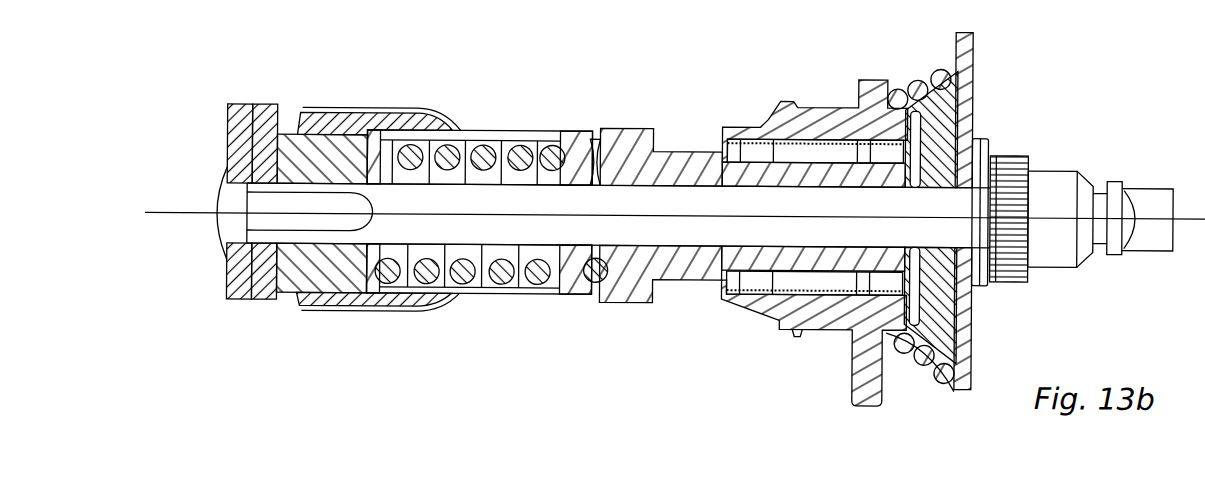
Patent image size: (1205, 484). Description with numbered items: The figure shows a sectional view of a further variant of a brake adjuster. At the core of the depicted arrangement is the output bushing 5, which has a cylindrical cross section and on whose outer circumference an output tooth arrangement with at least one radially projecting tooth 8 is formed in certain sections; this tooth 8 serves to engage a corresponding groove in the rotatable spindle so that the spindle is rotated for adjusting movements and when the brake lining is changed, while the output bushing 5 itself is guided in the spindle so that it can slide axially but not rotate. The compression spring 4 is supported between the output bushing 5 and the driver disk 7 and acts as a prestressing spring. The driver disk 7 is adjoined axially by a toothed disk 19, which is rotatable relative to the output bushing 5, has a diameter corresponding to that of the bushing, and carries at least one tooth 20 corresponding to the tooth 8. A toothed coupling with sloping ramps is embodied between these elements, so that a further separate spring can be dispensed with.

The tooth 20 is at (237, 105).
The toothed disk 19 is at (258, 104).
The tooth 8 is at (376, 110).
The output bushing 5 is at (410, 124).
The compression spring 4 is at (487, 135).
The driver disk 7 is at (332, 263).